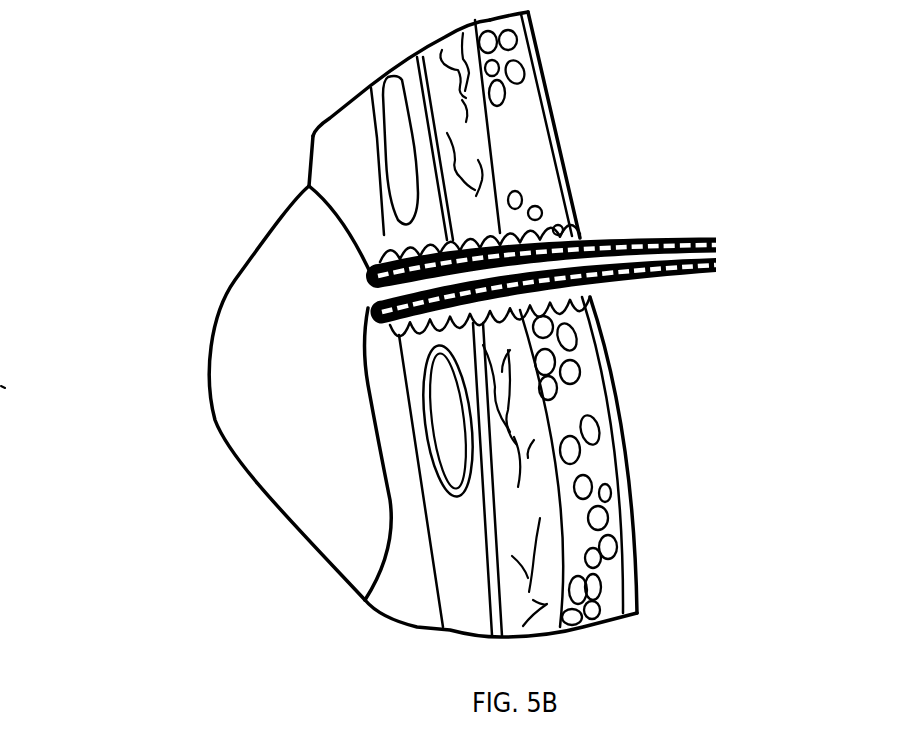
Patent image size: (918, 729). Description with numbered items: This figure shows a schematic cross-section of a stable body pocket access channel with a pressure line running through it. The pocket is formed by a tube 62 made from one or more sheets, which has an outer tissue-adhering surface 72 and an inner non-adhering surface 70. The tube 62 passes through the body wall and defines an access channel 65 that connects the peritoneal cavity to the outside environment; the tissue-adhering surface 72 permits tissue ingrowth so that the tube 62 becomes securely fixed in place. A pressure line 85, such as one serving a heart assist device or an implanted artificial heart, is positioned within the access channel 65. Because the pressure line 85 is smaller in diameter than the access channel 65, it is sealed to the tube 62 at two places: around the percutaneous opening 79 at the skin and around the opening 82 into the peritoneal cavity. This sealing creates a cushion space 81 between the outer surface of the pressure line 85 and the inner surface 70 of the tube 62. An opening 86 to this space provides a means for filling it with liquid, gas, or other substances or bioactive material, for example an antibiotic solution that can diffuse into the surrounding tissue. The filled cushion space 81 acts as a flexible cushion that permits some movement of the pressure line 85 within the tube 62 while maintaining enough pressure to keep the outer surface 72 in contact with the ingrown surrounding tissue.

The tube 62 is at (590, 305).
The access channel 65 is at (586, 352).
The inner non-adhering surface 70 is at (522, 240).
The outer tissue-adhering surface 72 is at (420, 243).
The percutaneous opening 79 is at (596, 240).
The cushion space 81 is at (478, 243).
The opening into the peritoneal cavity 82 is at (375, 272).
The pressure line 85 is at (690, 254).
The opening to cushion space 86 is at (585, 240).